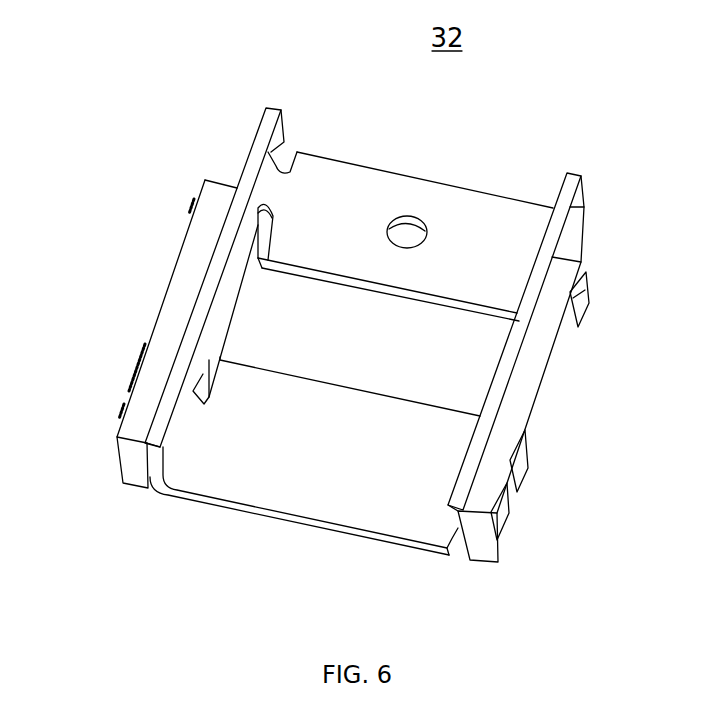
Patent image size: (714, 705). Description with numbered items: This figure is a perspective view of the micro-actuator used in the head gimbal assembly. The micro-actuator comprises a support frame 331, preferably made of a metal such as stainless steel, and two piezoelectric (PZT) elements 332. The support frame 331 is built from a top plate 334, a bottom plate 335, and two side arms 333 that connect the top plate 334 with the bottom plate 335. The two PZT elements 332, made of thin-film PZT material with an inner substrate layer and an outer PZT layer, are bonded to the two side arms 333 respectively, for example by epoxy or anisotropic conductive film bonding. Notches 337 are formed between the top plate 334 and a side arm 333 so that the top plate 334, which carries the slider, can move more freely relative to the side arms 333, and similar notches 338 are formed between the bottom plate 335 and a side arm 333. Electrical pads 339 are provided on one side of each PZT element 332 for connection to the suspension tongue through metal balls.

The support frame 331 is at (470, 158).
The piezoelectric (PZT) element 332 is at (127, 457).
The side arm 333 is at (258, 160).
The top plate 334 is at (357, 197).
The bottom plate 335 is at (318, 463).
The notch 337 is at (255, 233).
The notch 338 is at (203, 382).
The electrical pad 339 is at (197, 202).